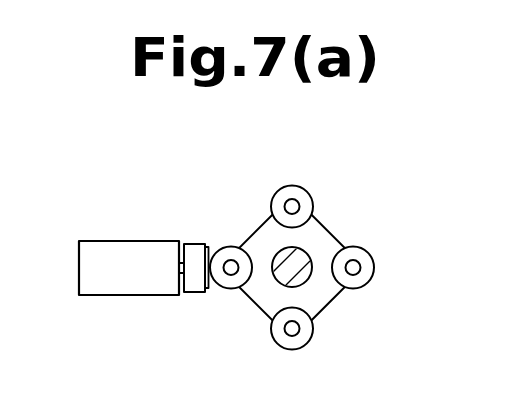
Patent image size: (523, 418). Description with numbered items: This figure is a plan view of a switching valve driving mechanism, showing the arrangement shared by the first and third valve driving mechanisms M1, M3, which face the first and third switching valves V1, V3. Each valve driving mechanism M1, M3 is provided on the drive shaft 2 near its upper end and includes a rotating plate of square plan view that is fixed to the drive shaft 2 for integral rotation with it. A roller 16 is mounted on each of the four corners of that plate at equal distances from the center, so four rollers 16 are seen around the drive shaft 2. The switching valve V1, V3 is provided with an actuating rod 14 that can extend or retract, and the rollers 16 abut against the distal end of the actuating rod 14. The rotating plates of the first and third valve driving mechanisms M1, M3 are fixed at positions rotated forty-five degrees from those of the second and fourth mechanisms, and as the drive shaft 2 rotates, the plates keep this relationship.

The drive shaft 2 is at (308, 284).
The actuating rod 14 is at (178, 263).
The roller 16 is at (277, 192).
The first valve driving mechanism M1 is at (348, 244).
The third valve driving mechanism M3 is at (339, 206).
The first switching valve V1 is at (129, 296).
The third switching valve V3 is at (117, 292).